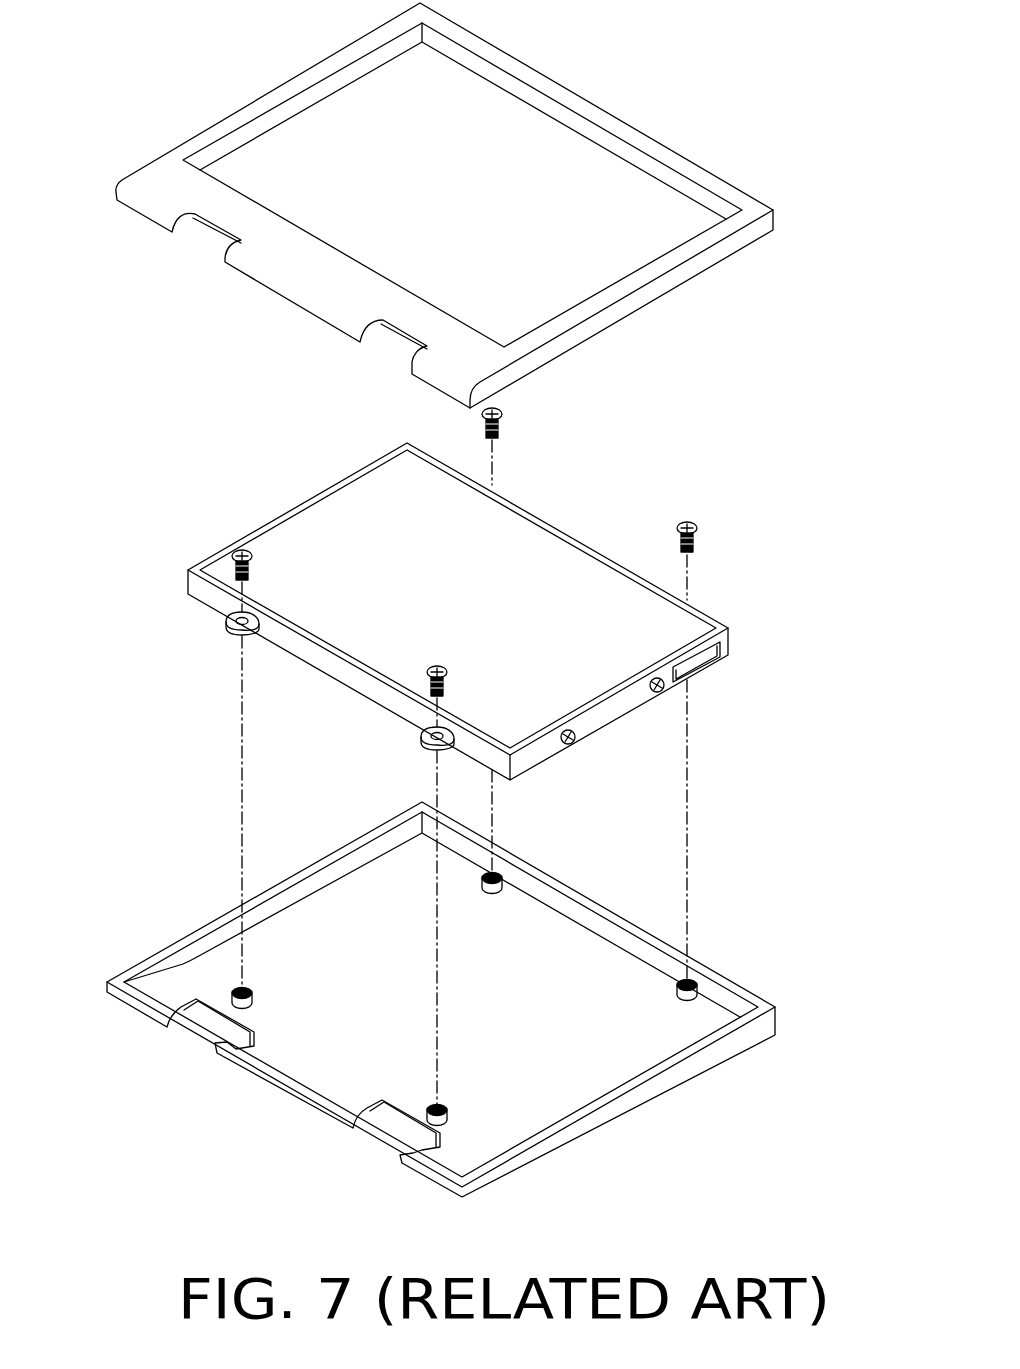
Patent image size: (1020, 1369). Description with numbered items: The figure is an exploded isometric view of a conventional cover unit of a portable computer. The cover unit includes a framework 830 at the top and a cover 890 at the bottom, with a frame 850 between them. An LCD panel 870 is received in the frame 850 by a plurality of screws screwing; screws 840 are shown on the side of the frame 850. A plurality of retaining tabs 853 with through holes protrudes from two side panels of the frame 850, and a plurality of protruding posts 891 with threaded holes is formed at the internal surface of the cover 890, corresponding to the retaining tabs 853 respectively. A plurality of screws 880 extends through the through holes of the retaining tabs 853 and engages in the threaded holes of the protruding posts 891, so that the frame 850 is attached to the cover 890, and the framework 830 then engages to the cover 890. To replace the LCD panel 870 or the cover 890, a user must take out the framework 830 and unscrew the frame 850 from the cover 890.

The framework 830 is at (611, 112).
The side screw 840 is at (573, 740).
The frame 850 is at (572, 540).
The retaining tabs 853 is at (230, 626).
The LCD panel 870 is at (347, 510).
The screws 880 is at (232, 548).
The cover 890 is at (172, 978).
The protruding posts 891 is at (238, 988).